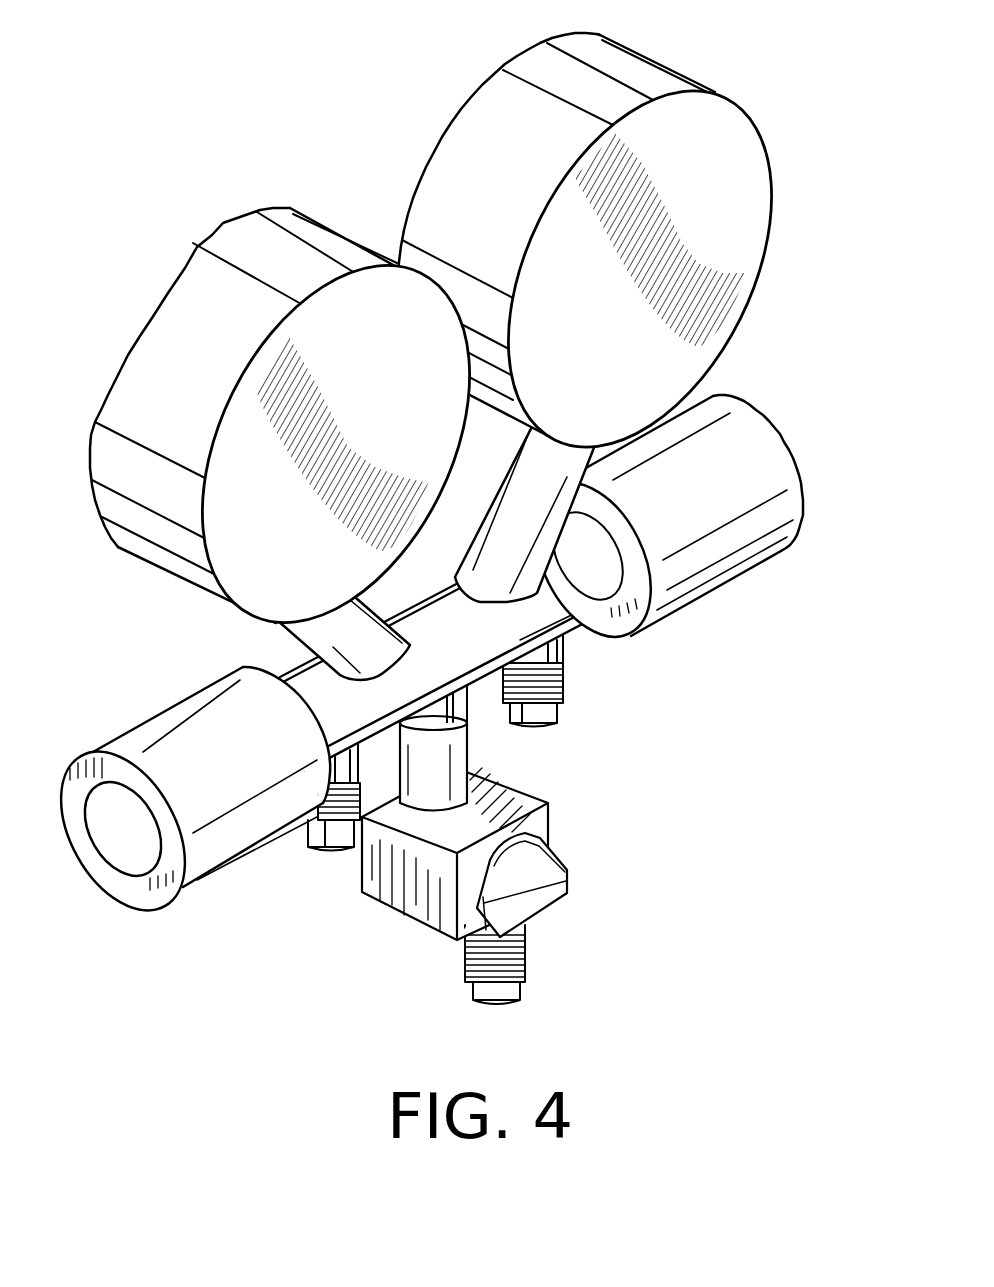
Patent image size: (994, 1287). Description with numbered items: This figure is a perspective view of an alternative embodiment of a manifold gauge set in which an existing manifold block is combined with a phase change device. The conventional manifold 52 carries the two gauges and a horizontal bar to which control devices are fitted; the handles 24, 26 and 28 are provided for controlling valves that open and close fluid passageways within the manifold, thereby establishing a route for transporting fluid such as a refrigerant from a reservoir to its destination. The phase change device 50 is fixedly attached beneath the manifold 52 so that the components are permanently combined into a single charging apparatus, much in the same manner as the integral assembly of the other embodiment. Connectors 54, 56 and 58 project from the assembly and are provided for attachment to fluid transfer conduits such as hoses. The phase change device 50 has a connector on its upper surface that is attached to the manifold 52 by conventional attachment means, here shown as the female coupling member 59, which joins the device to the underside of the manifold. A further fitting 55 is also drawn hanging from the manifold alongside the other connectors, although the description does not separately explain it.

The handle 24 is at (175, 700).
The handle 26 is at (568, 882).
The handle 28 is at (733, 580).
The phase change device 50 is at (573, 838).
The manifold 52 is at (788, 450).
The connector 54 is at (340, 848).
The second fitting 55 is at (562, 697).
The connector 56 is at (503, 1000).
The connector 58 is at (450, 712).
The female coupling member 59 is at (428, 803).